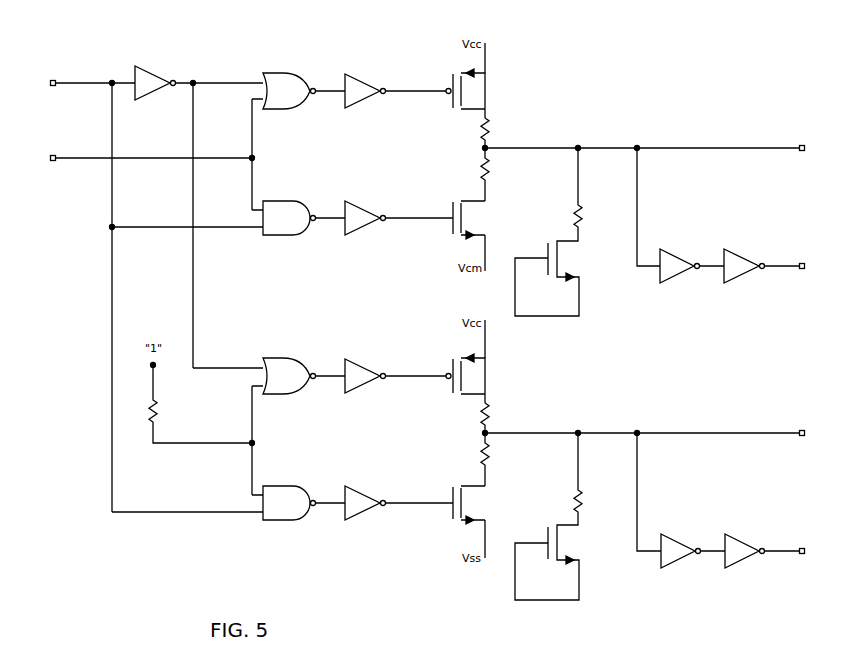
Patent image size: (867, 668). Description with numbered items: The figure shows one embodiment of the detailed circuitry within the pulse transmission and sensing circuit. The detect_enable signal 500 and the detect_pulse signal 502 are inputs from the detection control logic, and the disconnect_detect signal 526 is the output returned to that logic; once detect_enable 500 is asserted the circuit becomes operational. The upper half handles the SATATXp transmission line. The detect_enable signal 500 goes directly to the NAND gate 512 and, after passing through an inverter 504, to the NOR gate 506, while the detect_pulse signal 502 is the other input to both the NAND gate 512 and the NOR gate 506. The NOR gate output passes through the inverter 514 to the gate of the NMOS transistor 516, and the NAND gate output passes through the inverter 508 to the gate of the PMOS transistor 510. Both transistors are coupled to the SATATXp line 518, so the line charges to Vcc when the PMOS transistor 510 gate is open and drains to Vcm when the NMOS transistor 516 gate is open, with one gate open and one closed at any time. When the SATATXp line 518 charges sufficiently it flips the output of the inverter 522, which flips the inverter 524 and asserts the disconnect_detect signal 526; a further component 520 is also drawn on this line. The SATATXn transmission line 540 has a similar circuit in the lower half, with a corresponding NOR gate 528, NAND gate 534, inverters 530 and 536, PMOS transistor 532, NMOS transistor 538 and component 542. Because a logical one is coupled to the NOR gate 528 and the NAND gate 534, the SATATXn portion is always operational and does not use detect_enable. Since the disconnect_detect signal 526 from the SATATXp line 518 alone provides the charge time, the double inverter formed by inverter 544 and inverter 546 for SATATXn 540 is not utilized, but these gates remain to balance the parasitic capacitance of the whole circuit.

The detect_enable signal 500 is at (52, 66).
The detect_pulse signal 502 is at (52, 141).
The inverter 504 is at (155, 91).
The NOR gate 506 is at (289, 99).
The inverter 508 is at (365, 99).
The PMOS transistor 510 is at (468, 135).
The NAND gate 512 is at (289, 225).
The inverter 514 is at (365, 225).
The NMOS transistor 516 is at (472, 220).
The SATATXp line 518 is at (796, 134).
The pull-down transistor 520 is at (549, 239).
The inverter 522 is at (680, 274).
The inverter 524 is at (744, 274).
The disconnect_detect signal 526 is at (790, 251).
The NOR gate 528 is at (289, 384).
The inverter 530 is at (365, 384).
The PMOS transistor 532 is at (468, 420).
The NAND gate 534 is at (289, 511).
The inverter 536 is at (365, 511).
The NMOS transistor 538 is at (472, 505).
The SATATXn transmission line 540 is at (796, 417).
The pull-down transistor 542 is at (549, 524).
The inverter 544 is at (681, 558).
The inverter 546 is at (745, 558).